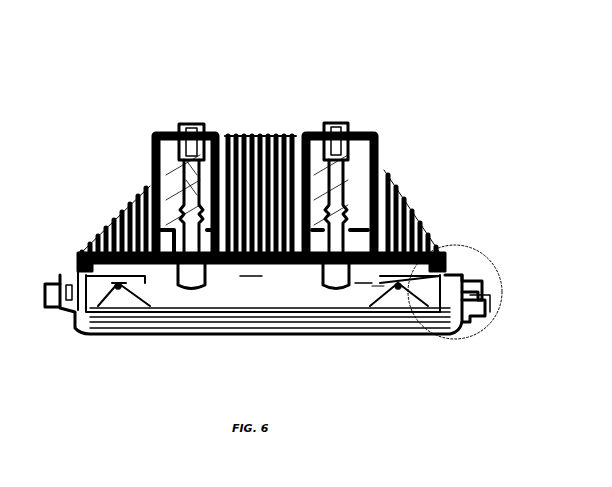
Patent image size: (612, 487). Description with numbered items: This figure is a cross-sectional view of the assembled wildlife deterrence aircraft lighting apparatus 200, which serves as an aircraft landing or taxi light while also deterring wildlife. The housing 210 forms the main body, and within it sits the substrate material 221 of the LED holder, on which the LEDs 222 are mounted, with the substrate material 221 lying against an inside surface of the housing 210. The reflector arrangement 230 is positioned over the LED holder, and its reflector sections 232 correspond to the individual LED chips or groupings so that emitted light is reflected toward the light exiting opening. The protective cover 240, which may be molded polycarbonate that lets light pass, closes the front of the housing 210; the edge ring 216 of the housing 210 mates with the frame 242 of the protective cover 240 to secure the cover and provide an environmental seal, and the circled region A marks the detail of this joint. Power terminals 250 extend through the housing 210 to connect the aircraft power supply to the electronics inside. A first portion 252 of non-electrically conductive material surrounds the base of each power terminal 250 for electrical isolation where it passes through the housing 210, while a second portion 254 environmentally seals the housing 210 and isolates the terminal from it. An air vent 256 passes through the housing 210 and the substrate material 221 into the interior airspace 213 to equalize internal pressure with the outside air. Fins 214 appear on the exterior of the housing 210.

The wildlife deterrence aircraft lighting apparatus 200 is at (372, 88).
The housing 210 is at (392, 142).
The interior airspace 213 is at (278, 330).
The heat sink fin 214 is at (400, 212).
The edge ring 216 is at (480, 278).
The substrate material 221 is at (254, 330).
The LEDs 222 is at (373, 283).
The reflector arrangement 230 is at (232, 332).
The reflector sections 232 is at (352, 283).
The protective cover 240 is at (372, 340).
The frame 242 is at (487, 310).
The power terminals 250 is at (178, 126).
The first portion of non-electrically conductive material 252 is at (118, 232).
The second portion of non-electrically conductive material 254 is at (152, 190).
The air vent 256 is at (268, 272).
The detail region A is at (455, 274).